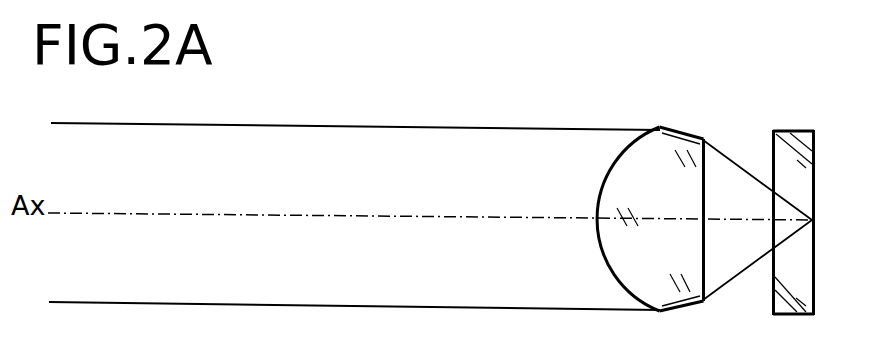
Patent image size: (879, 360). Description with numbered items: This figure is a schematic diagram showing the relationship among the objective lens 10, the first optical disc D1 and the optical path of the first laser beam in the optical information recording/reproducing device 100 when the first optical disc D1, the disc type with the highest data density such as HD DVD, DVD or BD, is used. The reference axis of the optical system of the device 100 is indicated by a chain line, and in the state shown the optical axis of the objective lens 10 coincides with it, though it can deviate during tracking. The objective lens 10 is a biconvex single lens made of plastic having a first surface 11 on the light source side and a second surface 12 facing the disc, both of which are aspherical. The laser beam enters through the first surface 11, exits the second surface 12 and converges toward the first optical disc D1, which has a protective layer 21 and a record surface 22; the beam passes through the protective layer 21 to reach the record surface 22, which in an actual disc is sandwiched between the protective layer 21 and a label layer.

The optical information recording/reproducing device 100 is at (363, 101).
The objective lens 10 is at (680, 128).
The first surface 11 is at (600, 196).
The second surface 12 is at (705, 254).
The first optical disc D1 is at (847, 73).
The protective layer 21 is at (792, 132).
The record surface 22 is at (814, 143).